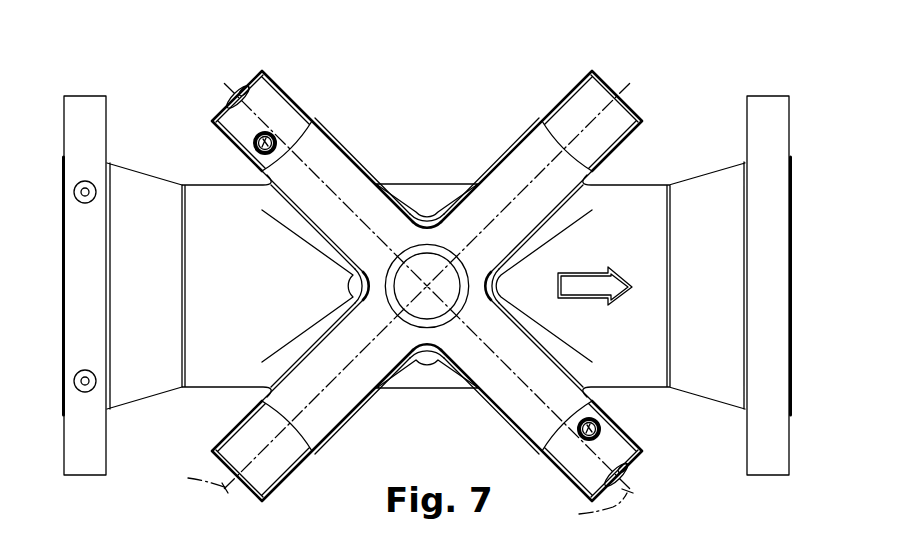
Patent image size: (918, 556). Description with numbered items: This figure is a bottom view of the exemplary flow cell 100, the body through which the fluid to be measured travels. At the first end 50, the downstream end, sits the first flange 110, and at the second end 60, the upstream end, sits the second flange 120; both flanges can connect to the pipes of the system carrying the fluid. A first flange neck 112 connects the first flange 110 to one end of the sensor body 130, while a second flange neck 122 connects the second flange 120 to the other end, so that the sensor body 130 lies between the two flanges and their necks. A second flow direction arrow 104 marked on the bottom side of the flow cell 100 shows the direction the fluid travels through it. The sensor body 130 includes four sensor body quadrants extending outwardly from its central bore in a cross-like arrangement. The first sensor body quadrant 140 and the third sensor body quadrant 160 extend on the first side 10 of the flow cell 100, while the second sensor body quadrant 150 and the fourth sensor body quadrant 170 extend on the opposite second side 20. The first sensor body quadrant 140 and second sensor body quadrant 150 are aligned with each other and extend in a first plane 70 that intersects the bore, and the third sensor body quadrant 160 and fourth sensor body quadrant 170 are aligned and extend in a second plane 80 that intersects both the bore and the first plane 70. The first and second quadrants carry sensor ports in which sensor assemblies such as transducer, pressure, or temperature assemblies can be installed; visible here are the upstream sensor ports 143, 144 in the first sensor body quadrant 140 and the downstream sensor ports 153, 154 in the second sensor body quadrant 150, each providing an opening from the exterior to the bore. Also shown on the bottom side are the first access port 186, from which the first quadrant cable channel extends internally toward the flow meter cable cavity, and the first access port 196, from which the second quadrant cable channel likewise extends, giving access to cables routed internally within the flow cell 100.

The flow cell 100 is at (428, 78).
The first side 10 is at (424, 165).
The second side 20 is at (430, 405).
The first end 50 is at (54, 220).
The second end 60 is at (802, 222).
The first plane 70 is at (592, 507).
The second plane 80 is at (194, 481).
The second flow direction arrow 104 is at (588, 281).
The first flange 110 is at (84, 114).
The first flange neck 112 is at (133, 191).
The second flange 120 is at (768, 110).
The second flange neck 122 is at (703, 192).
The sensor body 130 is at (213, 205).
The first sensor body quadrant 140 is at (310, 156).
The upstream sensor port 143 is at (232, 102).
The upstream sensor port 144 is at (240, 85).
The second sensor body quadrant 150 is at (568, 408).
The downstream sensor port 153 is at (624, 480).
The downstream sensor port 154 is at (628, 463).
The third sensor body quadrant 160 is at (528, 170).
The fourth sensor body quadrant 170 is at (291, 396).
The first access port 186 is at (277, 132).
The first access port 196 is at (605, 411).